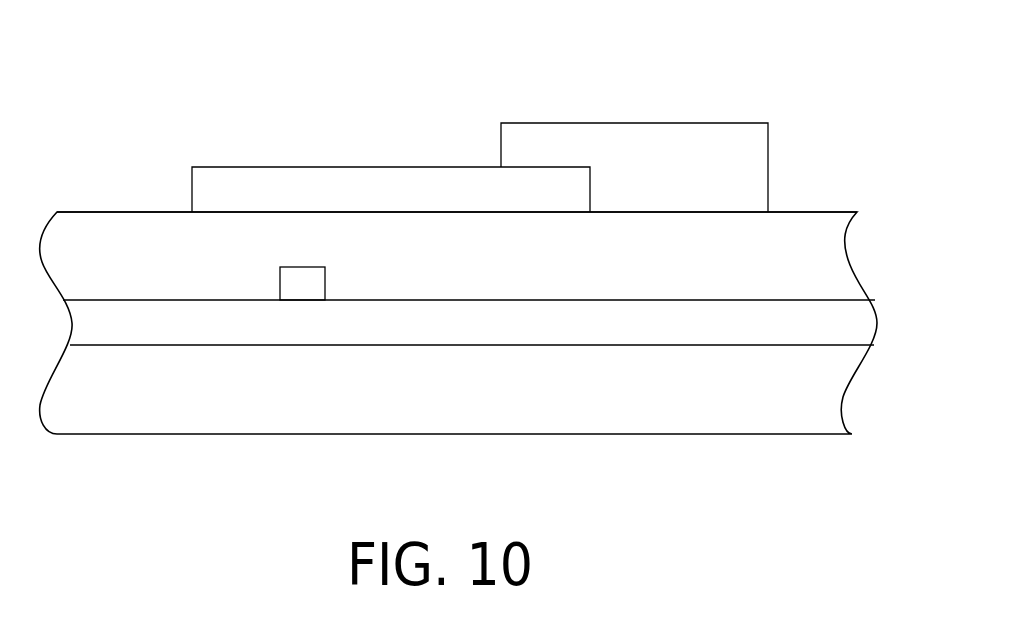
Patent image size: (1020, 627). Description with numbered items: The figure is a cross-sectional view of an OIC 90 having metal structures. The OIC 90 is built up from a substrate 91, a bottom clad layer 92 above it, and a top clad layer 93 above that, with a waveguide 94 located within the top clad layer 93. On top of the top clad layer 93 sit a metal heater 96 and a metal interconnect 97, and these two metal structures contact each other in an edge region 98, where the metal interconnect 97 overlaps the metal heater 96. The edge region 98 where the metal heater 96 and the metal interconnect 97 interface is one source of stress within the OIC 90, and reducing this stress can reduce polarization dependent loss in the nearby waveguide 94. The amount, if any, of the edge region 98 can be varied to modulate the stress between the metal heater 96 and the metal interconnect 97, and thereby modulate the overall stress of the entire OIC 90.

The OIC 90 is at (493, 242).
The substrate 91 is at (813, 427).
The bottom clad layer 92 is at (813, 339).
The top clad layer 93 is at (813, 297).
The waveguide 94 is at (298, 283).
The metal heater 96 is at (213, 189).
The metal interconnect 97 is at (745, 203).
The edge region 98 is at (590, 112).